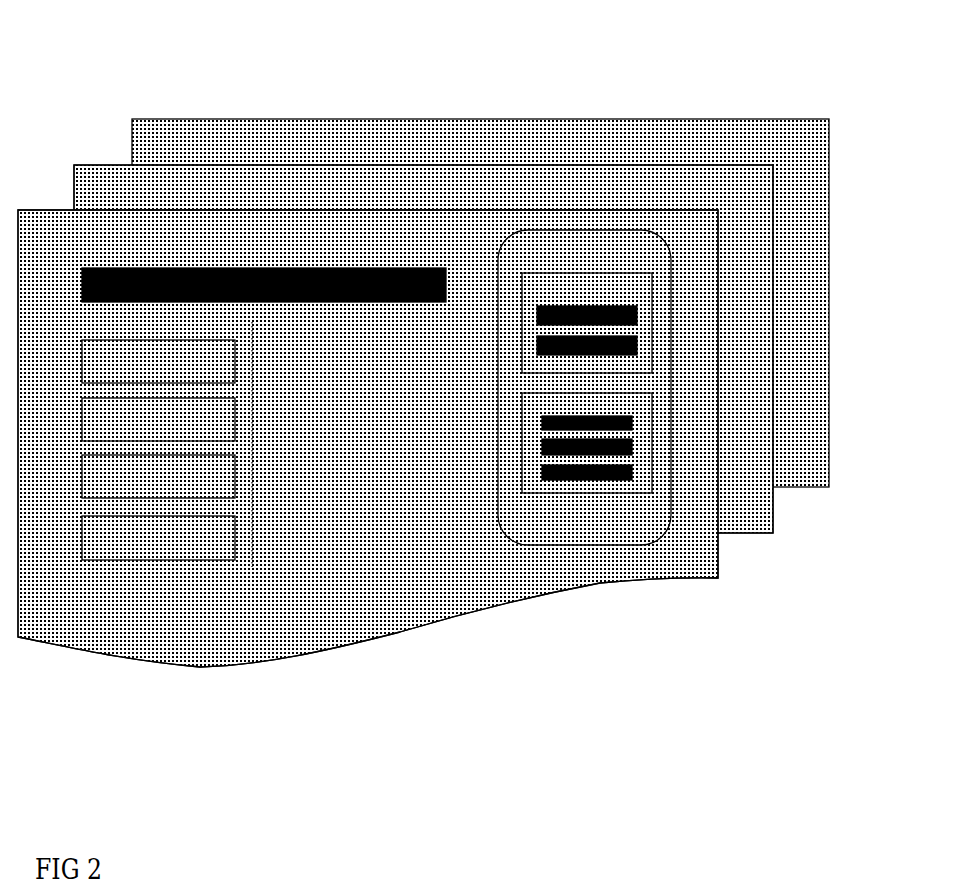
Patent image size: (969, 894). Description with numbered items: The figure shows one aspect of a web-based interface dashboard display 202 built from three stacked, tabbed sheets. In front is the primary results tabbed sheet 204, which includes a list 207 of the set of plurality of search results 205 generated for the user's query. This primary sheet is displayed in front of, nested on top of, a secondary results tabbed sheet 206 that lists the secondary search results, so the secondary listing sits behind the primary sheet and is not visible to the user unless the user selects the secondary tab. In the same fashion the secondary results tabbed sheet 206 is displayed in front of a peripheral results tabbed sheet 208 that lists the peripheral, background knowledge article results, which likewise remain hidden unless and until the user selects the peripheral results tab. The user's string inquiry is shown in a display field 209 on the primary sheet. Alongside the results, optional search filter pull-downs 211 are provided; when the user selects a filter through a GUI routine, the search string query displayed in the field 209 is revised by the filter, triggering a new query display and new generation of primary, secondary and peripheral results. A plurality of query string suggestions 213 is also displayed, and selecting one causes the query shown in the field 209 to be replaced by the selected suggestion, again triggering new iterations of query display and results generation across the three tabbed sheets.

The web-based interface dashboard display 202 is at (153, 46).
The primary results tabbed sheet 204 is at (274, 651).
The secondary results tabbed sheet 206 is at (405, 187).
The peripheral results tabbed sheet 208 is at (493, 142).
The search results 205 is at (143, 550).
The list 207 is at (272, 444).
The search string query display field 209 is at (377, 290).
The search filter pull-downs 211 is at (540, 317).
The query string suggestions 213 is at (543, 420).